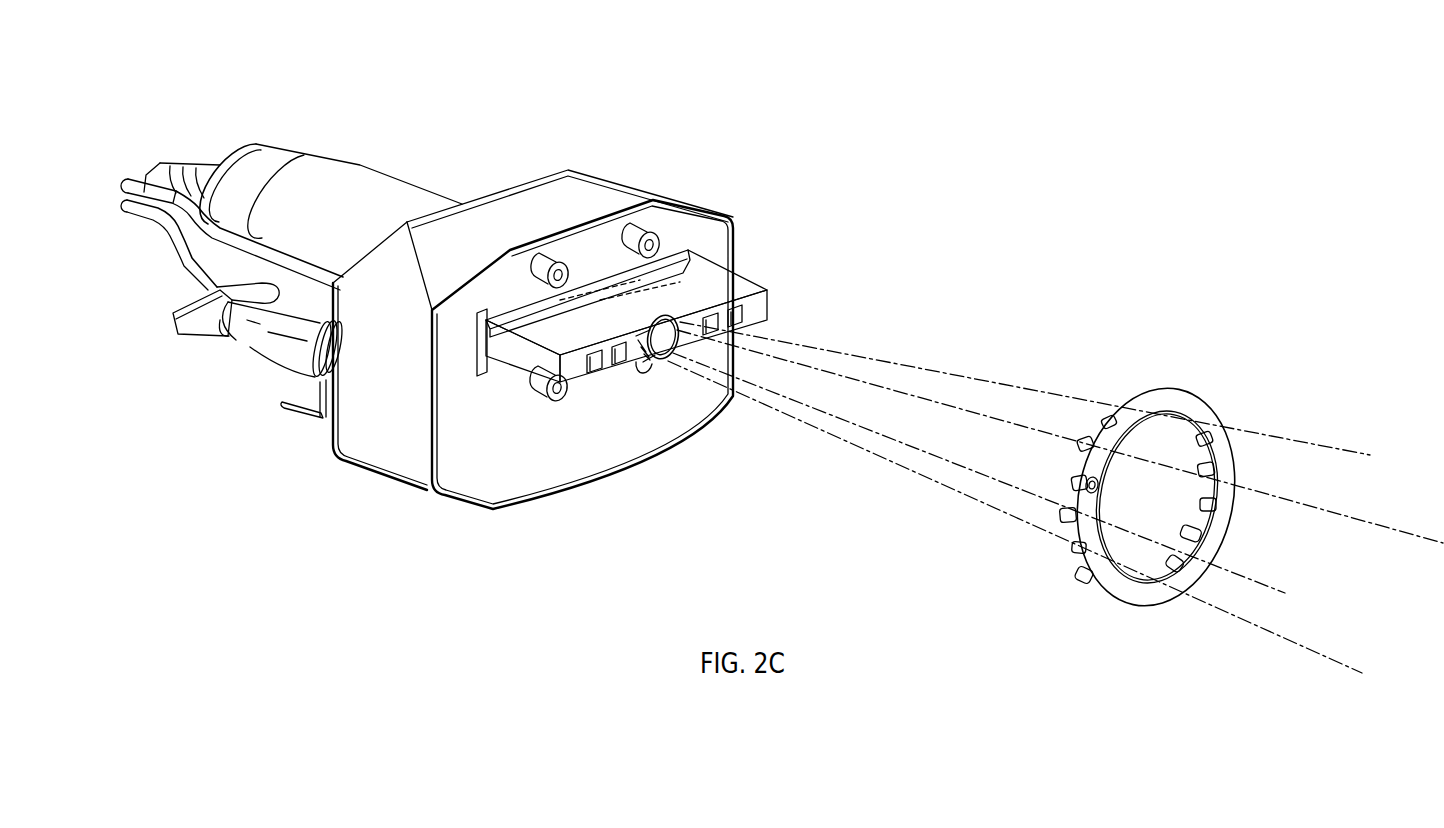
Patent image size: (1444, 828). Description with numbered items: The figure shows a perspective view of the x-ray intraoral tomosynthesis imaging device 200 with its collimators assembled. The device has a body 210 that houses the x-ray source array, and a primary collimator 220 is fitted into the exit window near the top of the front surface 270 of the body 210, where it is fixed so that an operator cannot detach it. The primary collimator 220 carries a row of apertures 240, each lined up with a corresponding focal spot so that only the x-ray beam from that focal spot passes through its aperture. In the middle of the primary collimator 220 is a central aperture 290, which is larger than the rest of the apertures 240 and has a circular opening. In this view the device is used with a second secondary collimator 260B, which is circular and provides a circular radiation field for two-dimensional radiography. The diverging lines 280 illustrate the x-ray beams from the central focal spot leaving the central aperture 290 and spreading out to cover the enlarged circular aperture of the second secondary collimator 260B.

The x-ray intraoral tomosynthesis imaging device 200 is at (512, 99).
The body 210 is at (363, 188).
The primary collimator 220 is at (744, 289).
The apertures 240 is at (637, 356).
The second secondary collimator 260B is at (1185, 400).
The front surface 270 is at (462, 488).
The diverging lines 280 is at (1047, 393).
The central aperture 290 is at (667, 376).